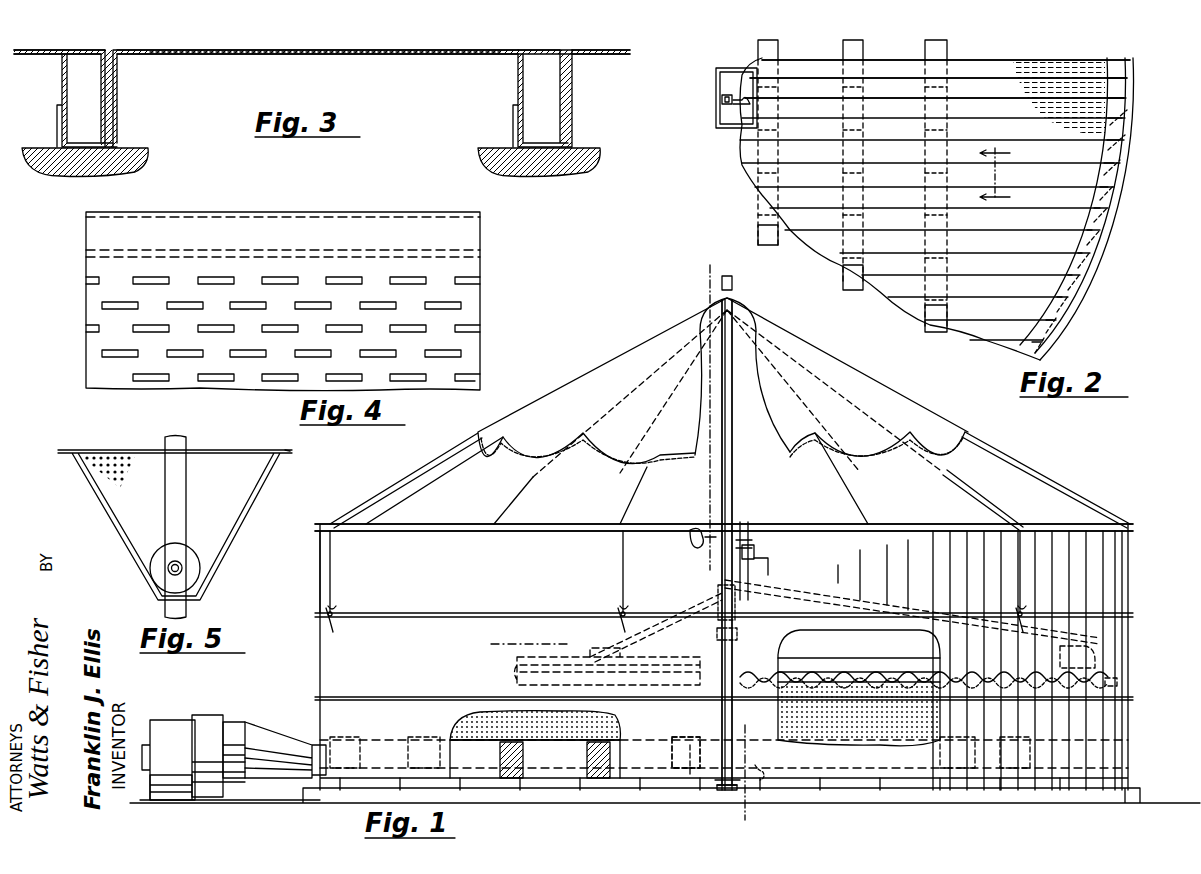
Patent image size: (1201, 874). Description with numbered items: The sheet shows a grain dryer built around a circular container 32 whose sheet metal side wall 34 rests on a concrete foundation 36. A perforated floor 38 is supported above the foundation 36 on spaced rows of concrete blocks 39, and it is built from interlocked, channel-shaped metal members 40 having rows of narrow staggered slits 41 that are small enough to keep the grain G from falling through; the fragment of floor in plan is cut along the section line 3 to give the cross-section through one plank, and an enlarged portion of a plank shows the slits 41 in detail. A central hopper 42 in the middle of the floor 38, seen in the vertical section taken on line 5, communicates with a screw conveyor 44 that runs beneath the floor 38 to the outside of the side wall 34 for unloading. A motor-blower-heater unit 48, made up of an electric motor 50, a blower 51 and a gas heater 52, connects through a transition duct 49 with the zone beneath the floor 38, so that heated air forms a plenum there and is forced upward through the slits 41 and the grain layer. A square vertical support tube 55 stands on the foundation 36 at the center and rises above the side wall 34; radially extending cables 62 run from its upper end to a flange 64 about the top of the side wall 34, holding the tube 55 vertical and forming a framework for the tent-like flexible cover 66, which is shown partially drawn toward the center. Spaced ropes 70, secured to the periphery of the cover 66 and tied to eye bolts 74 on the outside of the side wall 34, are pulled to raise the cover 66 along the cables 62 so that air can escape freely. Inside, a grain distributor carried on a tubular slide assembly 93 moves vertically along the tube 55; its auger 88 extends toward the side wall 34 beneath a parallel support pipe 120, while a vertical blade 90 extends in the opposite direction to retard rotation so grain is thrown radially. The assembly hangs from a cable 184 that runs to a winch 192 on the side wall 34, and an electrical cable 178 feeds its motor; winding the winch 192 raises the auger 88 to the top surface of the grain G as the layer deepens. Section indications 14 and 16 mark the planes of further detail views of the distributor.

In FIG. 2, the section line 3— 3 is at (1002, 175).
In FIG. 1, the section line 5— 5 is at (748, 727).
In FIG. 1, the section line 14- 14 is at (712, 273).
In FIG. 1, the section line 16- 16 is at (570, 644).
In FIG. 1, the container 32 is at (297, 576).
In FIG. 1, the side wall 34 is at (425, 672).
In FIG. 1, the concrete foundation 36 is at (640, 805).
In FIG. 3, the perforated floor 38 is at (490, 35).
In FIG. 2, the perforated floor 38 is at (718, 211).
In FIG. 1, the perforated floor 38 is at (532, 742).
In FIG. 3, the concrete blocks 39 is at (136, 150).
In FIG. 2, the concrete blocks 39 is at (776, 48).
In FIG. 1, the concrete blocks 39 is at (545, 790).
In FIG. 3, the channel-shaped metal members 40 is at (42, 50).
In FIG. 2, the channel-shaped metal members 40 is at (974, 108).
In FIG. 4, the channel-shaped metal members 40 is at (470, 300).
In FIG. 3, the slits 41 is at (213, 50).
In FIG. 2, the slits 41 is at (1054, 62).
In FIG. 4, the slits 41 is at (345, 277).
In FIG. 2, the central hopper 42 is at (725, 82).
In FIG. 5, the central hopper 42 is at (222, 464).
In FIG. 1, the central hopper 42 is at (688, 745).
In FIG. 2, the screw conveyor 44 is at (746, 110).
In FIG. 5, the screw conveyor 44 is at (191, 552).
In FIG. 1, the screw conveyor 44 is at (760, 775).
In FIG. 1, the motor-blower-heater unit 48 is at (278, 714).
In FIG. 1, the transition duct 49 is at (275, 778).
In FIG. 1, the electric motor 50 is at (142, 740).
In FIG. 1, the blower 51 is at (172, 800).
In FIG. 1, the gas heater 52 is at (210, 720).
In FIG. 2, the vertical support tube 55 is at (722, 100).
In FIG. 5, the vertical support tube 55 is at (165, 447).
In FIG. 1, the vertical support tube 55 is at (732, 283).
In FIG. 1, the cables 62 is at (398, 485).
In FIG. 1, the flange 64 is at (1070, 524).
In FIG. 1, the flexible cover 66 is at (723, 387).
In FIG. 1, the ropes 70 is at (333, 556).
In FIG. 1, the eye bolts 74 is at (326, 608).
In FIG. 1, the auger 88 is at (825, 678).
In FIG. 1, the vertical blade 90 is at (515, 683).
In FIG. 1, the tubular slide assembly 93 is at (737, 639).
In FIG. 1, the support pipe 120 is at (878, 660).
In FIG. 1, the electrical cable 178 is at (684, 524).
In FIG. 1, the cable 184 is at (748, 522).
In FIG. 1, the winch 192 is at (760, 568).
In FIG. 1, the grain G is at (850, 705).